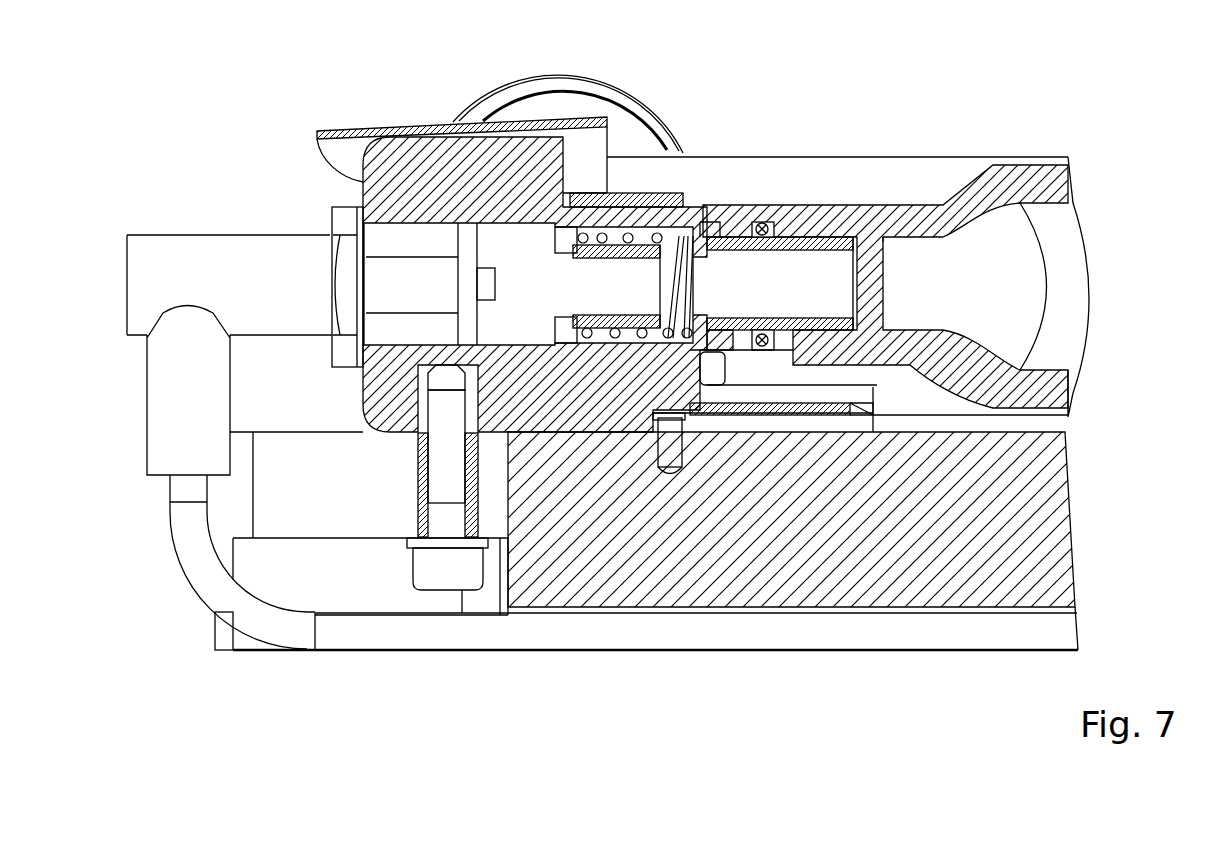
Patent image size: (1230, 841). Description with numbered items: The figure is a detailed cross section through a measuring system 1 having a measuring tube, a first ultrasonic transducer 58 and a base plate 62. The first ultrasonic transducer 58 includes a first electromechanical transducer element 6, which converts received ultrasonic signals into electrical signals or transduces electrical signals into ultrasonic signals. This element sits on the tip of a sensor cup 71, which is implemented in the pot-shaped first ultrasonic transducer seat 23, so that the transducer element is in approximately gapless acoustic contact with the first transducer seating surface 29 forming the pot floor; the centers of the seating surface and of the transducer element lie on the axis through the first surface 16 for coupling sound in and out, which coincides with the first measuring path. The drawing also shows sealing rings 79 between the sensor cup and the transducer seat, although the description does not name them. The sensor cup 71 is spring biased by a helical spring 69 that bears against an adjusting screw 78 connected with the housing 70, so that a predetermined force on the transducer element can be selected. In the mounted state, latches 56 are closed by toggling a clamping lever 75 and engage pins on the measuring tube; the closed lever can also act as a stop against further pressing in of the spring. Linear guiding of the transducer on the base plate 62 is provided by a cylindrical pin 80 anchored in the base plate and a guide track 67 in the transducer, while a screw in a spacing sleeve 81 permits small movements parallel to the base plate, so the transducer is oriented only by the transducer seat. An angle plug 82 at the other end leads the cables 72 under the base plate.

The measuring system 1 is at (160, 125).
The first electromechanical transducer element 6 is at (835, 243).
The first surface for coupling sound in and/or out 16 is at (895, 282).
The first ultrasonic transducer seat 23 is at (860, 218).
The first transducer seating surface 29 is at (876, 229).
The latches 56 is at (676, 192).
The first ultrasonic transducer 58 is at (381, 104).
The base plate 62 is at (1012, 543).
The guide track 67 is at (813, 385).
The helical spring 69 is at (627, 237).
The housing 70 is at (383, 405).
The sensor cup 71 is at (818, 335).
The cables 72 is at (471, 632).
The clamping lever 75 is at (337, 130).
The adjusting screw 78 is at (603, 295).
The O-ring seal 79 is at (760, 222).
The cylindrical pin 80 is at (675, 442).
The spacing sleeve 81 is at (420, 488).
The angle plug 82 is at (127, 280).